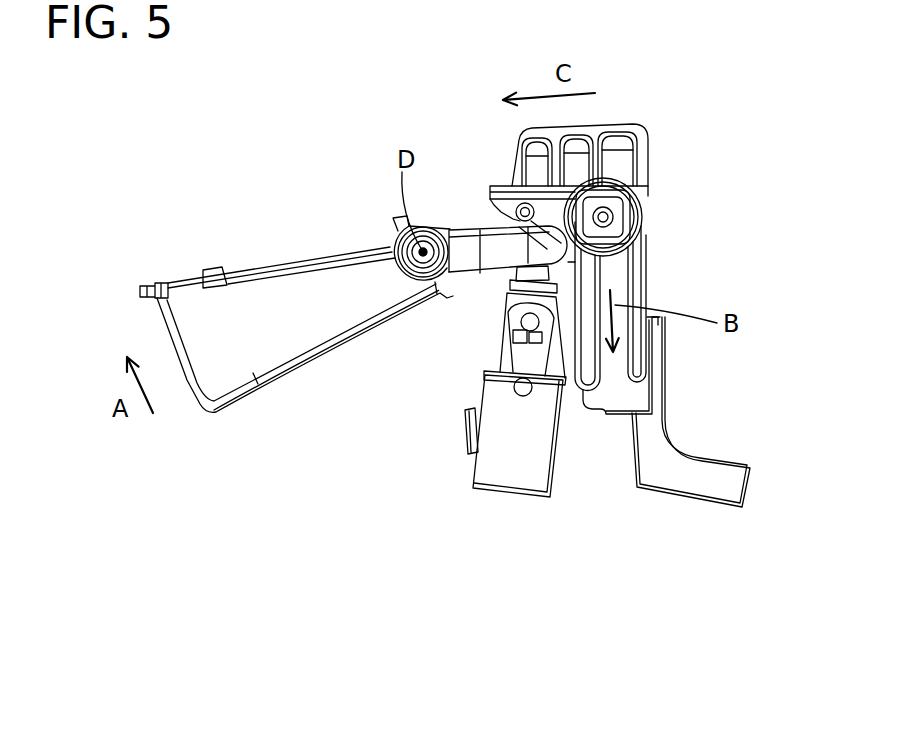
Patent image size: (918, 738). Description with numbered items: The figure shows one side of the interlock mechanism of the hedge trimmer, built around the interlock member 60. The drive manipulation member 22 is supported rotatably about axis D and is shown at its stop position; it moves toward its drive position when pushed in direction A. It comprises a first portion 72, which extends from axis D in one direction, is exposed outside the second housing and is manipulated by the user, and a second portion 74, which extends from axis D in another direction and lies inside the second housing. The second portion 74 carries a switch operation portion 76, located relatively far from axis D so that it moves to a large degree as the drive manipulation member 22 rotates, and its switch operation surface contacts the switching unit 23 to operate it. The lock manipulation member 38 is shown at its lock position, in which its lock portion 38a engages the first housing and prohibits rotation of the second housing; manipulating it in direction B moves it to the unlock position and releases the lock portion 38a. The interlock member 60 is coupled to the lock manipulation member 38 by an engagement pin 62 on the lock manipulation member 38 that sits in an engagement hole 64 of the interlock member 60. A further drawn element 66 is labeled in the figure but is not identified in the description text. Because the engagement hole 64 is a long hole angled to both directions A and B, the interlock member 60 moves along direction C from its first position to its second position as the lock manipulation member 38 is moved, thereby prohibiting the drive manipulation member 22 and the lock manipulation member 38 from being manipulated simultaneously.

The drive manipulation member 22 is at (192, 313).
The switching unit 23 is at (488, 466).
The lock manipulation member 38 is at (635, 257).
The lock portion 38a is at (735, 475).
The interlock member 60 is at (537, 190).
The engagement pin 62 is at (525, 230).
The engagement hole 64 is at (594, 220).
The pin 66 is at (492, 217).
The first portion 72 is at (256, 224).
The second portion 74 is at (466, 299).
The switch operation portion 76 is at (568, 262).